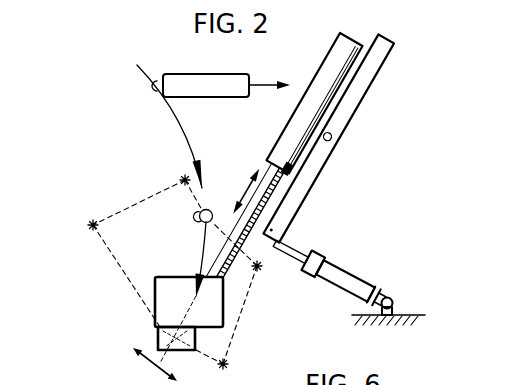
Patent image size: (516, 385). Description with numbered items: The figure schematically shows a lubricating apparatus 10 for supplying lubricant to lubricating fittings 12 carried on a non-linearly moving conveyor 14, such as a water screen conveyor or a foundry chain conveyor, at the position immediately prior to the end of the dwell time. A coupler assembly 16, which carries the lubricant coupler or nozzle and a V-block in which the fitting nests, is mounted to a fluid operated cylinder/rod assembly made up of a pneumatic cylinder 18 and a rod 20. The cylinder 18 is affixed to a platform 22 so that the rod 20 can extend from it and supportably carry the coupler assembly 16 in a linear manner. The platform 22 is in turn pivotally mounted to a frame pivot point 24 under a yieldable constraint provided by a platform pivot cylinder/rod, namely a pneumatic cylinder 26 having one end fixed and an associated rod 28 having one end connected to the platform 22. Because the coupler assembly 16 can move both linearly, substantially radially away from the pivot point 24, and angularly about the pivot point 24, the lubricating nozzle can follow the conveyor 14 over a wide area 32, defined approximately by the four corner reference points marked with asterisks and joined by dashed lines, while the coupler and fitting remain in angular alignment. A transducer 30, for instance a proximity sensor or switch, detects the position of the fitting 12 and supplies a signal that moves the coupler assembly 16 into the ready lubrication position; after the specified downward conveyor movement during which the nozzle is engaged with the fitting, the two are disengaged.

The lubricating apparatus 10 is at (450, 98).
The lubricating fitting 12 is at (152, 90).
The conveyor 14 is at (166, 110).
The coupler assembly 16 is at (148, 337).
The pneumatic cylinder 18 is at (328, 72).
The rod 20 is at (240, 220).
The platform 22 is at (374, 62).
The frame pivot point 24 is at (332, 137).
The pneumatic cylinder 26 is at (356, 278).
The rod 28 is at (298, 247).
The transducer 30 is at (172, 75).
The area 32 is at (163, 208).